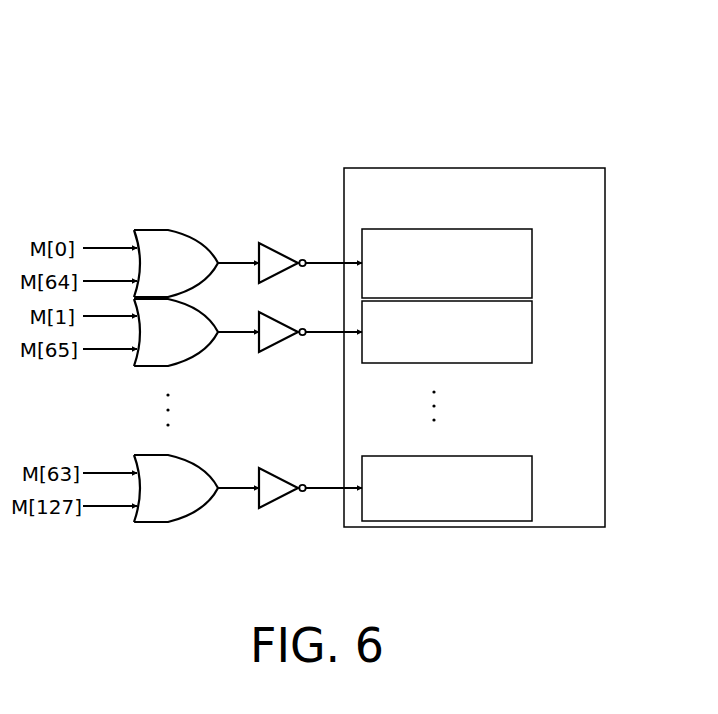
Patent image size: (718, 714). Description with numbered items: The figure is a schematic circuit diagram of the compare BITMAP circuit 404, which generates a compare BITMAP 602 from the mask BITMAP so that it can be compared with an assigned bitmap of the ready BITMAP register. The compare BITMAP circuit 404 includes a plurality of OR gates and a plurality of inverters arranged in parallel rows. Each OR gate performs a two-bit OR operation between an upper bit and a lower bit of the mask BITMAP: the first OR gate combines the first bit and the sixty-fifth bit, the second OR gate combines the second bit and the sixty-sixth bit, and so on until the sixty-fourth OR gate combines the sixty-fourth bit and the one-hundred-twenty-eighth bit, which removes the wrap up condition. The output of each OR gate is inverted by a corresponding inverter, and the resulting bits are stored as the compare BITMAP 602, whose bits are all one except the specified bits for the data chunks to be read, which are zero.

The compare BITMAP circuit 404 is at (487, 58).
The compare BITMAP 602 is at (595, 174).